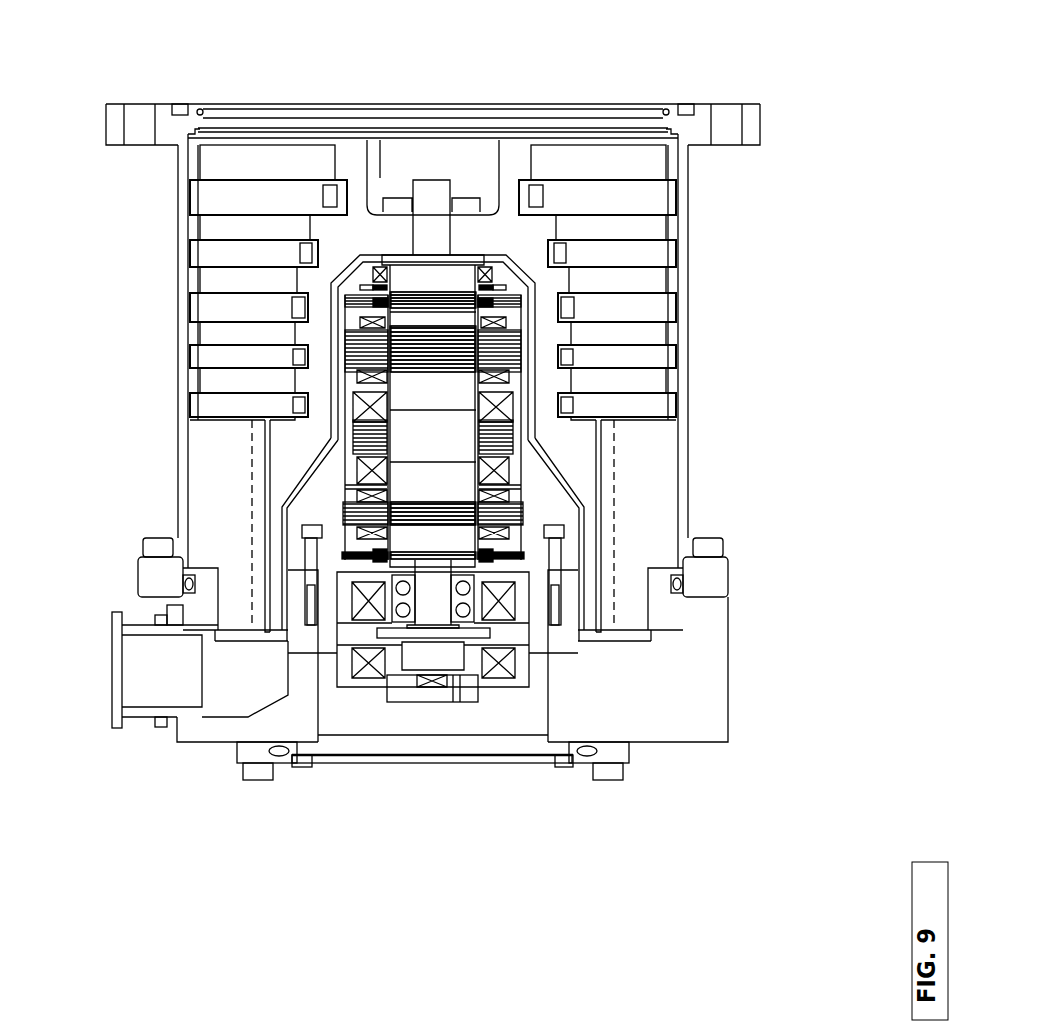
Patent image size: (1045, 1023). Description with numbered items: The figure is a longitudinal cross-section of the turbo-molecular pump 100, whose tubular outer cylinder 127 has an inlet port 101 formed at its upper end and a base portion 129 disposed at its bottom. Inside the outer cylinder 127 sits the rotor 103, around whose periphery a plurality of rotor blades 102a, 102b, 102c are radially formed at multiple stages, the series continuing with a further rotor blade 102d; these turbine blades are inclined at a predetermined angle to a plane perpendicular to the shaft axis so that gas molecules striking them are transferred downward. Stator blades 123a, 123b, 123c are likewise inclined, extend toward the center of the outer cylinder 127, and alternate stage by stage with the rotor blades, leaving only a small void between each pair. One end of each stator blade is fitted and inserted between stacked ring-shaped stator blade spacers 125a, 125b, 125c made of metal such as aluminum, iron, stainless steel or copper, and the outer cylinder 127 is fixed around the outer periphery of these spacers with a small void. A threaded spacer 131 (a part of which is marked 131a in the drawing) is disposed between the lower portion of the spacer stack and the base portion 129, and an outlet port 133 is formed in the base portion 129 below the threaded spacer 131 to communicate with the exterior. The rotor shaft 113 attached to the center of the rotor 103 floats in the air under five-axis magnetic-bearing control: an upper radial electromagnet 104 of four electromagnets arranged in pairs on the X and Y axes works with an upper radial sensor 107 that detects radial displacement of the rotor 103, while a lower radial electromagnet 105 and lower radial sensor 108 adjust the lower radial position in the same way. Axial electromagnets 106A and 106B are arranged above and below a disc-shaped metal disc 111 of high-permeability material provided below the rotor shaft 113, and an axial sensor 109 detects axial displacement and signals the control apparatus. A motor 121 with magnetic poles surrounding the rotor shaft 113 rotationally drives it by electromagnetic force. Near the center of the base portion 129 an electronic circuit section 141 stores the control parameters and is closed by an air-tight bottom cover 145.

The turbo-molecular pump 100 is at (468, 25).
The inlet port 101 is at (480, 153).
The rotor 103 is at (373, 180).
The stator blade spacer 125a is at (188, 154).
The rotor blade 102a is at (210, 164).
The stator blade 123a is at (210, 195).
The stator blade spacer 125b is at (197, 230).
The rotor blade 102b is at (210, 227).
The stator blade 123b is at (210, 254).
The stator blade spacer 125c is at (197, 292).
The rotor blade 102c is at (210, 284).
The stator blade 123c is at (210, 310).
The rotor cylinder centerline 131a is at (255, 457).
The rotor blade 102d is at (277, 489).
The threaded spacer 131 is at (208, 522).
The metal disc 111 is at (385, 635).
The outlet port 133 is at (140, 700).
The outer cylinder 127 is at (683, 225).
The upper radial sensor 107 is at (520, 290).
The rotor shaft 113 is at (463, 310).
The upper radial electromagnet 104 is at (520, 340).
The motor 121 is at (548, 430).
The lower radial electromagnet 105 is at (522, 507).
The lower radial sensor 108 is at (522, 555).
The axial electromagnet 106A is at (513, 603).
The axial electromagnet 106B is at (513, 667).
The bottom cover 145 is at (330, 763).
The electronic circuit section 141 is at (395, 713).
The axial sensor 109 is at (430, 690).
The base portion 129 is at (661, 737).